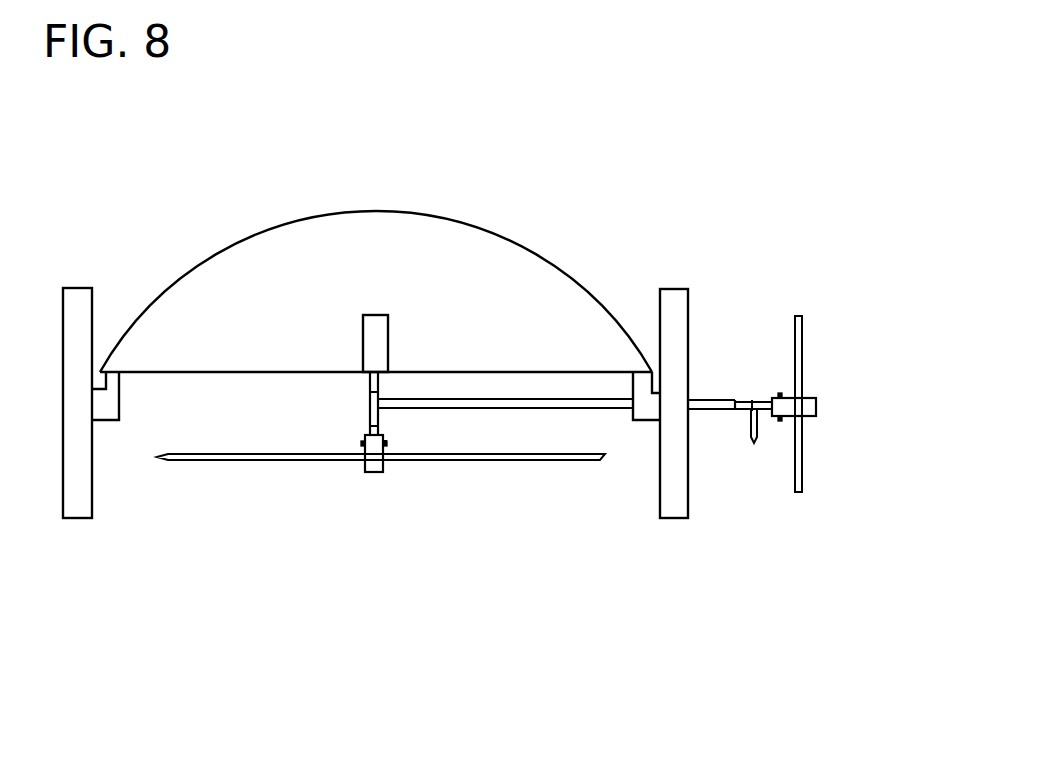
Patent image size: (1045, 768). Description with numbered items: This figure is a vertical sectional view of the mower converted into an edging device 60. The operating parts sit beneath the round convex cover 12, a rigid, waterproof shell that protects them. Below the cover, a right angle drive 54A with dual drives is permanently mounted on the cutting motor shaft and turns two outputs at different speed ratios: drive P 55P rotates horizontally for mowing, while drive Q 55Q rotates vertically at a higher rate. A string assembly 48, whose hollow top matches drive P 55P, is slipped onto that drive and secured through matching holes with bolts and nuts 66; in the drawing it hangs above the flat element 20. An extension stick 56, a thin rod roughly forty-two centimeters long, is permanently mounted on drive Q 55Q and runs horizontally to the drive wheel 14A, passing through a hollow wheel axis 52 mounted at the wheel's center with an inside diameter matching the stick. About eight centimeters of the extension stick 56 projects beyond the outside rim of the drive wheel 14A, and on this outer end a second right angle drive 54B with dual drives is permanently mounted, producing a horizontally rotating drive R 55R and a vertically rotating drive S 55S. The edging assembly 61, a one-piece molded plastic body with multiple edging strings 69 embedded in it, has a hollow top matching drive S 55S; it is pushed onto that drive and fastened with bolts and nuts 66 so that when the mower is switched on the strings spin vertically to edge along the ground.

The round convex cover 12 is at (268, 225).
The drive wheel 14A is at (653, 463).
The tray 20 is at (182, 461).
The string assembly 48 is at (375, 478).
The hollow wheel axis 52 is at (690, 398).
The right angle drive 54A is at (368, 397).
The second right angle drive 54B is at (752, 397).
The drive P 55P is at (367, 427).
The drive Q 55Q is at (383, 399).
The drive R 55R is at (753, 443).
The drive S 55S is at (752, 417).
The extension stick 56 is at (473, 415).
The edging device 60 is at (831, 296).
The edging assembly 61 is at (815, 393).
The bolts and nuts 66 is at (390, 443).
The edging strings 69 is at (800, 455).